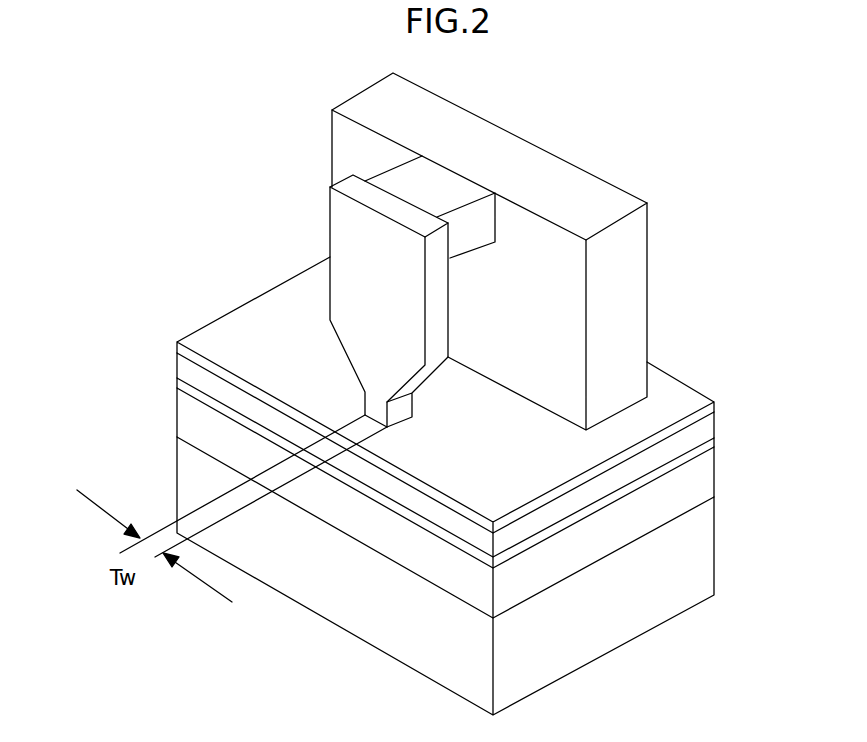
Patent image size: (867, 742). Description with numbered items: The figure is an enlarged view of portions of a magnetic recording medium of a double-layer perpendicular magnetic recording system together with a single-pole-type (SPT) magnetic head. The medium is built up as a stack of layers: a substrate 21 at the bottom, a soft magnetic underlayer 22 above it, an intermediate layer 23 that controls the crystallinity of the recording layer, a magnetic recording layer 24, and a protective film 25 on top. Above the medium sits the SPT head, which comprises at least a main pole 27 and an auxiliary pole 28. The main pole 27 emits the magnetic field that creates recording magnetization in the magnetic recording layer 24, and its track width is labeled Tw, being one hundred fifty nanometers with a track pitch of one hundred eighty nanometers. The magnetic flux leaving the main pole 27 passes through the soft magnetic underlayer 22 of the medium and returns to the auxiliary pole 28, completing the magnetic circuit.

The substrate 21 is at (707, 538).
The soft magnetic underlayer 22 is at (705, 478).
The intermediate layer 23 is at (707, 450).
The magnetic recording layer 24 is at (705, 430).
The protective film 25 is at (718, 398).
The main pole 27 is at (338, 238).
The auxiliary pole 28 is at (598, 193).